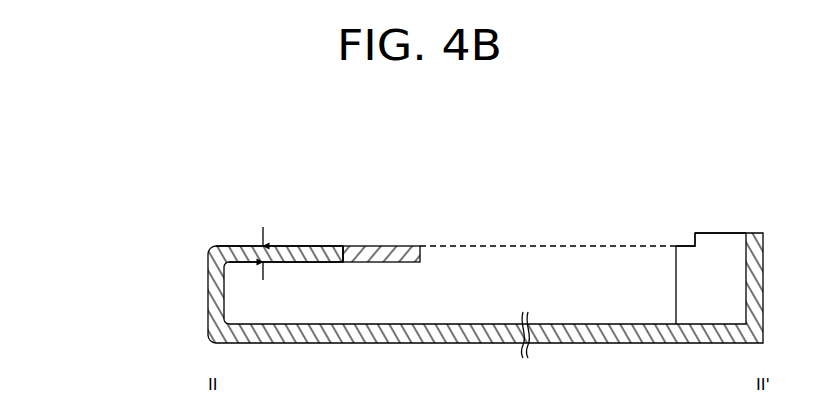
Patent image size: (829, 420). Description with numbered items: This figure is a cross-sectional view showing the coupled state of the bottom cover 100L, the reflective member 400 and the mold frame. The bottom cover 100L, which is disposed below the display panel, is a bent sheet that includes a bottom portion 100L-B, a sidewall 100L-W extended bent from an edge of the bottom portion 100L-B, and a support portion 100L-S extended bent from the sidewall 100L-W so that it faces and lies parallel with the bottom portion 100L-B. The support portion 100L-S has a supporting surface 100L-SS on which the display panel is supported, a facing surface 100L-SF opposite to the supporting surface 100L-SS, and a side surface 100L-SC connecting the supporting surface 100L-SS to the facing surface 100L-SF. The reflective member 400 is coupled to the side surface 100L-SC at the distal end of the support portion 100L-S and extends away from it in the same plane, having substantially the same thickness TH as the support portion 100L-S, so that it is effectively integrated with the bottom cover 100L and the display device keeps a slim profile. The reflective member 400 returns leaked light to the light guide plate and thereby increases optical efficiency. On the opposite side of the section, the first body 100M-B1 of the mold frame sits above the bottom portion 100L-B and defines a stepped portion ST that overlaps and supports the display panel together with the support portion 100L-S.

The bottom cover 100L is at (87, 227).
The support portion 100L-S is at (238, 250).
The sidewall 100L-W is at (208, 295).
The bottom portion 100L-B is at (243, 335).
The facing surface 100L-SF is at (322, 263).
The supporting surface 100L-SS is at (304, 246).
The side surface 100L-SC is at (332, 247).
The reflective member 400 is at (410, 247).
The thickness TH is at (245, 245).
The stepped portion ST is at (684, 231).
The first body 100M-B1 is at (725, 240).